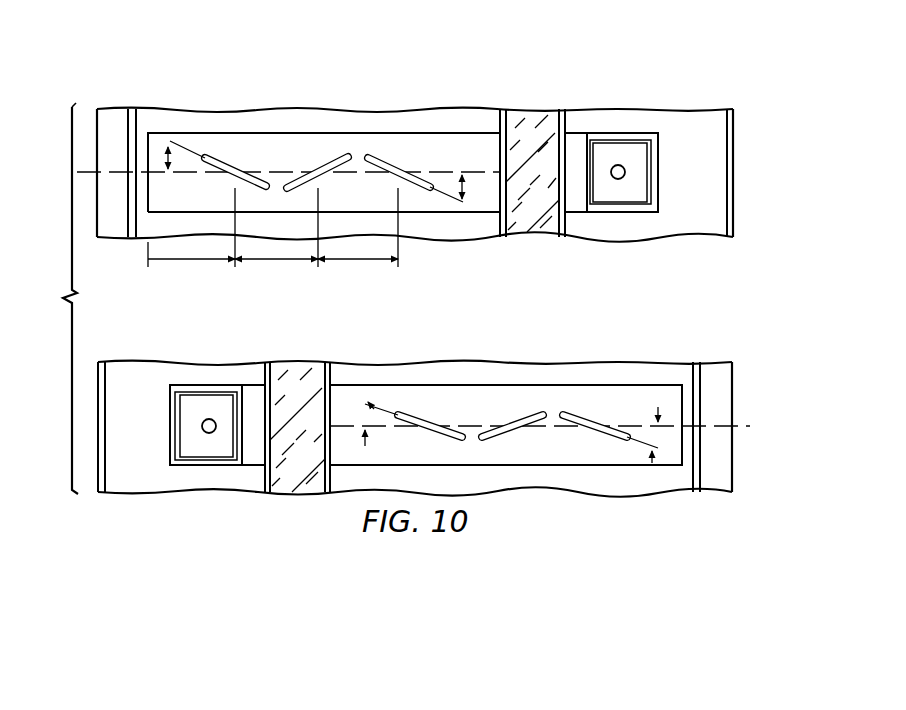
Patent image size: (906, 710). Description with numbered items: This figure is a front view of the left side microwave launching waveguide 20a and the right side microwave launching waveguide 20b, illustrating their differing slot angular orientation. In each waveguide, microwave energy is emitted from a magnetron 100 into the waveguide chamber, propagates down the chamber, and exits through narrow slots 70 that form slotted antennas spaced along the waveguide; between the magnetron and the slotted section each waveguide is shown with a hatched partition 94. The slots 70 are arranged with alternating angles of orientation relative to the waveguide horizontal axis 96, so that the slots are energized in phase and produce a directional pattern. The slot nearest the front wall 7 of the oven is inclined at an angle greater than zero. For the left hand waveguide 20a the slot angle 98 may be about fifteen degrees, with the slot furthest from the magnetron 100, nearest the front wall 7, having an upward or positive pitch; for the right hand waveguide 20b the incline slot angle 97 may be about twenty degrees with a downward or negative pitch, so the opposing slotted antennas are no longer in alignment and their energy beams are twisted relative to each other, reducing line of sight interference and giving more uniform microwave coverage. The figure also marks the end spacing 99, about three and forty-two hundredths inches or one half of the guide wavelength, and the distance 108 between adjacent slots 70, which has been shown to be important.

The front wall 7 is at (128, 125).
The left side microwave launching waveguide 20a is at (577, 148).
The right side microwave launching waveguide 20b is at (253, 450).
The slots 70 is at (218, 156).
The partition wall 94 is at (523, 110).
The waveguide horizontal axis 96 is at (79, 170).
The incline slot angle 97 is at (362, 410).
The slot angle 98 is at (160, 146).
The end spacing 99 is at (187, 260).
The magnetron 100 is at (637, 170).
The distance between slots 108 is at (276, 260).